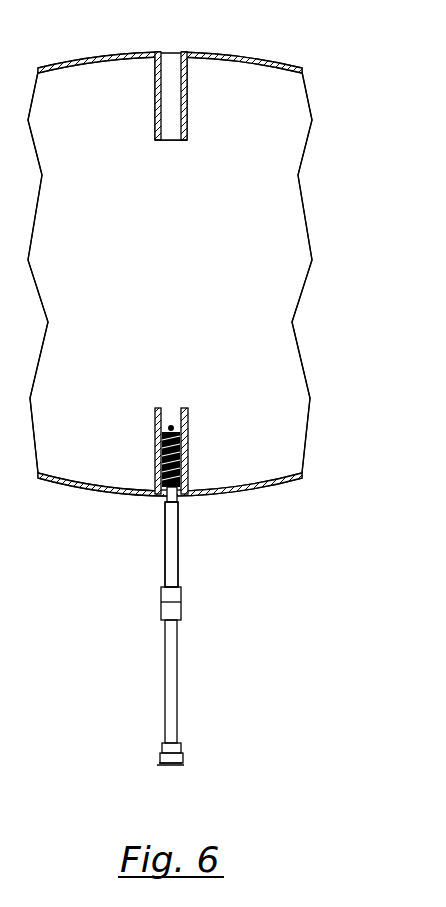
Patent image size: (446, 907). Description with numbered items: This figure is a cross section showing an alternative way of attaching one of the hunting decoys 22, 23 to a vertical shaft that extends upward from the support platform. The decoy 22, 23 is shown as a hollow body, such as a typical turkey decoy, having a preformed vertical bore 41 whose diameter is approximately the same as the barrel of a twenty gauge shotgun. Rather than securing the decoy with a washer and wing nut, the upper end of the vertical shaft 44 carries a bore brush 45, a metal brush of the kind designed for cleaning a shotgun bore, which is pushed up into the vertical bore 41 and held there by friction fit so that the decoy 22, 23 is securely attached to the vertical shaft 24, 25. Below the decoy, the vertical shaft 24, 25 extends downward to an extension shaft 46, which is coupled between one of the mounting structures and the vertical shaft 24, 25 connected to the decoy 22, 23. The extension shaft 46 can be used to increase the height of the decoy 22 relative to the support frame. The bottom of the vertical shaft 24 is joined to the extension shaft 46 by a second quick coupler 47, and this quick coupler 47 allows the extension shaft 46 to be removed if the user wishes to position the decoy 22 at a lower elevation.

The first hunting decoy 22 is at (270, 63).
The second hunting decoy 23 is at (170, 273).
The vertical bore 41 is at (165, 425).
The bore brush 45 is at (178, 433).
The vertical shaft 44 is at (173, 498).
The first vertical shaft 24 is at (170, 542).
The second vertical shaft 25 is at (171, 544).
The second quick coupler 47 is at (173, 600).
The extension shaft 46 is at (168, 688).